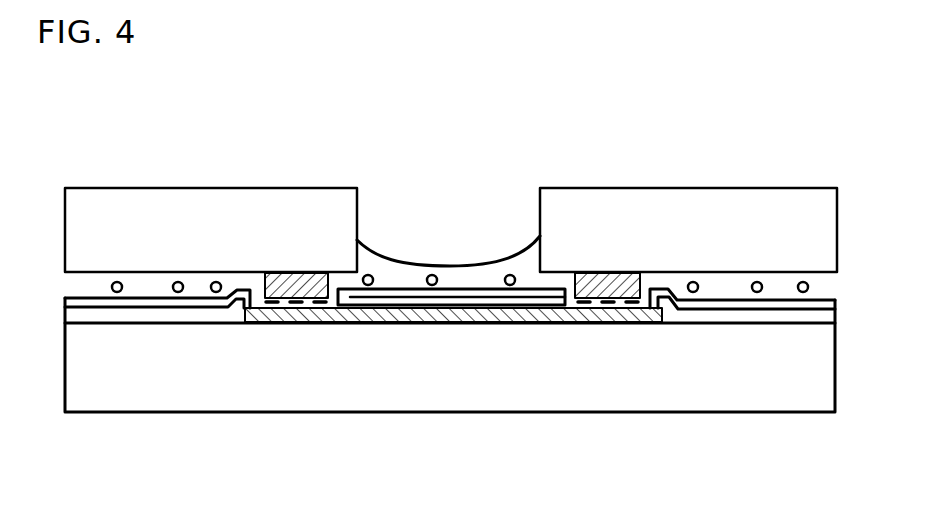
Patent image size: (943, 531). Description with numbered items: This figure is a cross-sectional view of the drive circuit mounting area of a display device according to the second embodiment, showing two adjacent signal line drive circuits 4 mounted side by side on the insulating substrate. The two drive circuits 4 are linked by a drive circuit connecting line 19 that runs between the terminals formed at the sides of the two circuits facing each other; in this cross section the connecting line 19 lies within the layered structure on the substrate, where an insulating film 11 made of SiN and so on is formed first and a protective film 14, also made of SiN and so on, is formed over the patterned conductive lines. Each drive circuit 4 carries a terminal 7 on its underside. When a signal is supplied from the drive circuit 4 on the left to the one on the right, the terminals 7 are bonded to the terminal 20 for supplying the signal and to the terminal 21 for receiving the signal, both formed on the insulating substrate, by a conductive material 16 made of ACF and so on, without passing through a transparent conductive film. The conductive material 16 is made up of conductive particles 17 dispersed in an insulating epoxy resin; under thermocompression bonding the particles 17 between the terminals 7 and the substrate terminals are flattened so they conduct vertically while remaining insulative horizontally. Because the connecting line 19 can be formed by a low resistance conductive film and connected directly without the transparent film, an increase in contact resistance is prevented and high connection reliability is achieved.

The signal line drive circuit 4 is at (183, 228).
The terminal 7 is at (312, 283).
The insulating film 11 is at (215, 322).
The protective film 14 is at (117, 299).
The conductive material 16 is at (485, 270).
The conductive particle 17 is at (429, 274).
The drive circuit connecting line 19 is at (530, 323).
The terminal for supplying a signal 20 is at (260, 328).
The terminal for receiving the signal 21 is at (570, 328).